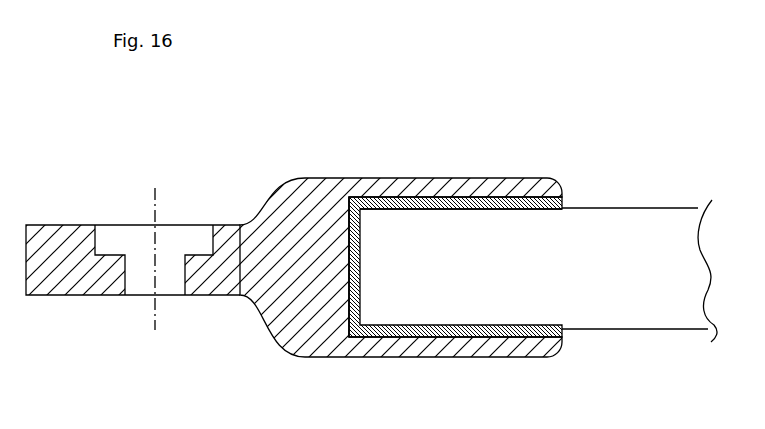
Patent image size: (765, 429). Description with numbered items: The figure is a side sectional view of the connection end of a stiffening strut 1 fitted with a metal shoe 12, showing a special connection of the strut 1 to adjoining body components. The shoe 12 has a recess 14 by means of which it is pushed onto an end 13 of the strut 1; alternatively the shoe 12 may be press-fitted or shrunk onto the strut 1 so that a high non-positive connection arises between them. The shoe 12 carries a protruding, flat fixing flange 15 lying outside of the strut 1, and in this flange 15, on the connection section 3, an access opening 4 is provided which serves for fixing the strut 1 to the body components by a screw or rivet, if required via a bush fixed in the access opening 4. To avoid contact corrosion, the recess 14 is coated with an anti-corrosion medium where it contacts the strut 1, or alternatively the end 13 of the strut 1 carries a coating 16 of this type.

The strut 1 is at (638, 198).
The connection section 3 is at (294, 243).
The access opening 4 is at (130, 265).
The metal shoe 12 is at (305, 180).
The end of the strut 13 is at (455, 301).
The recess 14 is at (387, 200).
The fixing flange 15 is at (72, 227).
The coating 16 is at (478, 210).